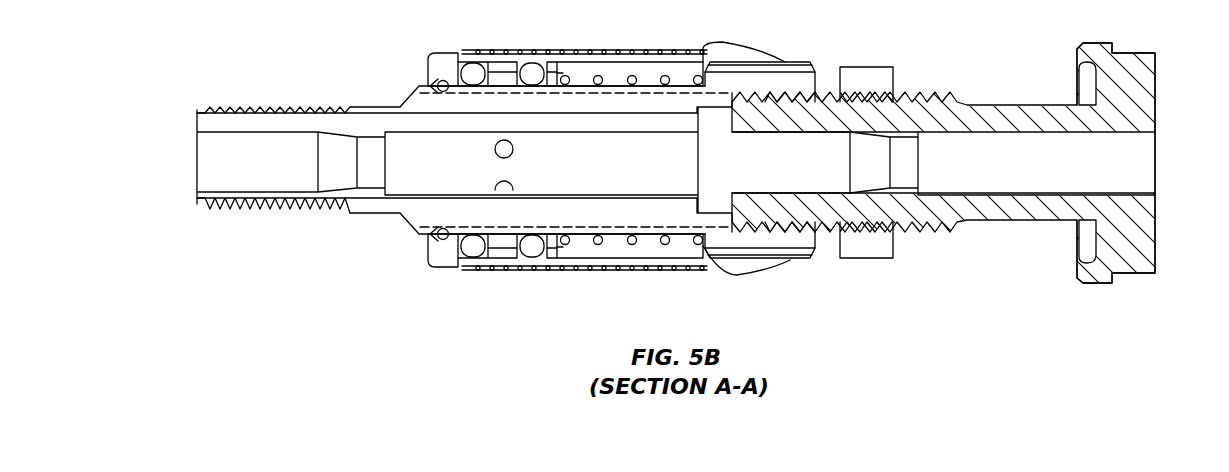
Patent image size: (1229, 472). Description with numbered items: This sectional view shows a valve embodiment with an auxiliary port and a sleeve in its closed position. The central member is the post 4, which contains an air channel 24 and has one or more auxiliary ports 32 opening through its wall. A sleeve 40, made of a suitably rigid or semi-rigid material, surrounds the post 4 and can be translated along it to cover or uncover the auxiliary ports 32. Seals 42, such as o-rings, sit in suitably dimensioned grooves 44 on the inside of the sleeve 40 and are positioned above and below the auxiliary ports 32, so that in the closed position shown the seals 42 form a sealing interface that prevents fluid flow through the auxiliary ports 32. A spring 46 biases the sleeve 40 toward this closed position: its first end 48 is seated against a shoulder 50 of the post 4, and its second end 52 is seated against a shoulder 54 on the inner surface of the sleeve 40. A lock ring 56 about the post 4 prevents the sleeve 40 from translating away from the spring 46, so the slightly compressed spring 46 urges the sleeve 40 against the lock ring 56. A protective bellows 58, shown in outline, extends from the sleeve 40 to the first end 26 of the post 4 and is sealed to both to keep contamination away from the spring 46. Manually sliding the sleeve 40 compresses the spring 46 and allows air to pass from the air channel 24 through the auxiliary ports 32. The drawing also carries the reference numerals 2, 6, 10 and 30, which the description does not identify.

The coupling assembly 2 is at (259, 282).
The post 4 is at (407, 100).
The flange 6 is at (1130, 58).
The fitting 10 is at (878, 66).
The air channel 24 is at (405, 180).
The first end of the post 26 is at (813, 62).
The threads 30 is at (228, 106).
The auxiliary ports 32 is at (500, 186).
The sleeve 40 is at (433, 52).
The seals 42 is at (483, 60).
The grooves 44 is at (452, 62).
The spring 46 is at (632, 64).
The first end of the spring 48 is at (700, 248).
The shoulder of the post 50 is at (709, 46).
The second end of the spring 52 is at (564, 246).
The shoulder of the sleeve 54 is at (556, 254).
The lock ring 56 is at (438, 82).
The bellows 58 is at (780, 62).